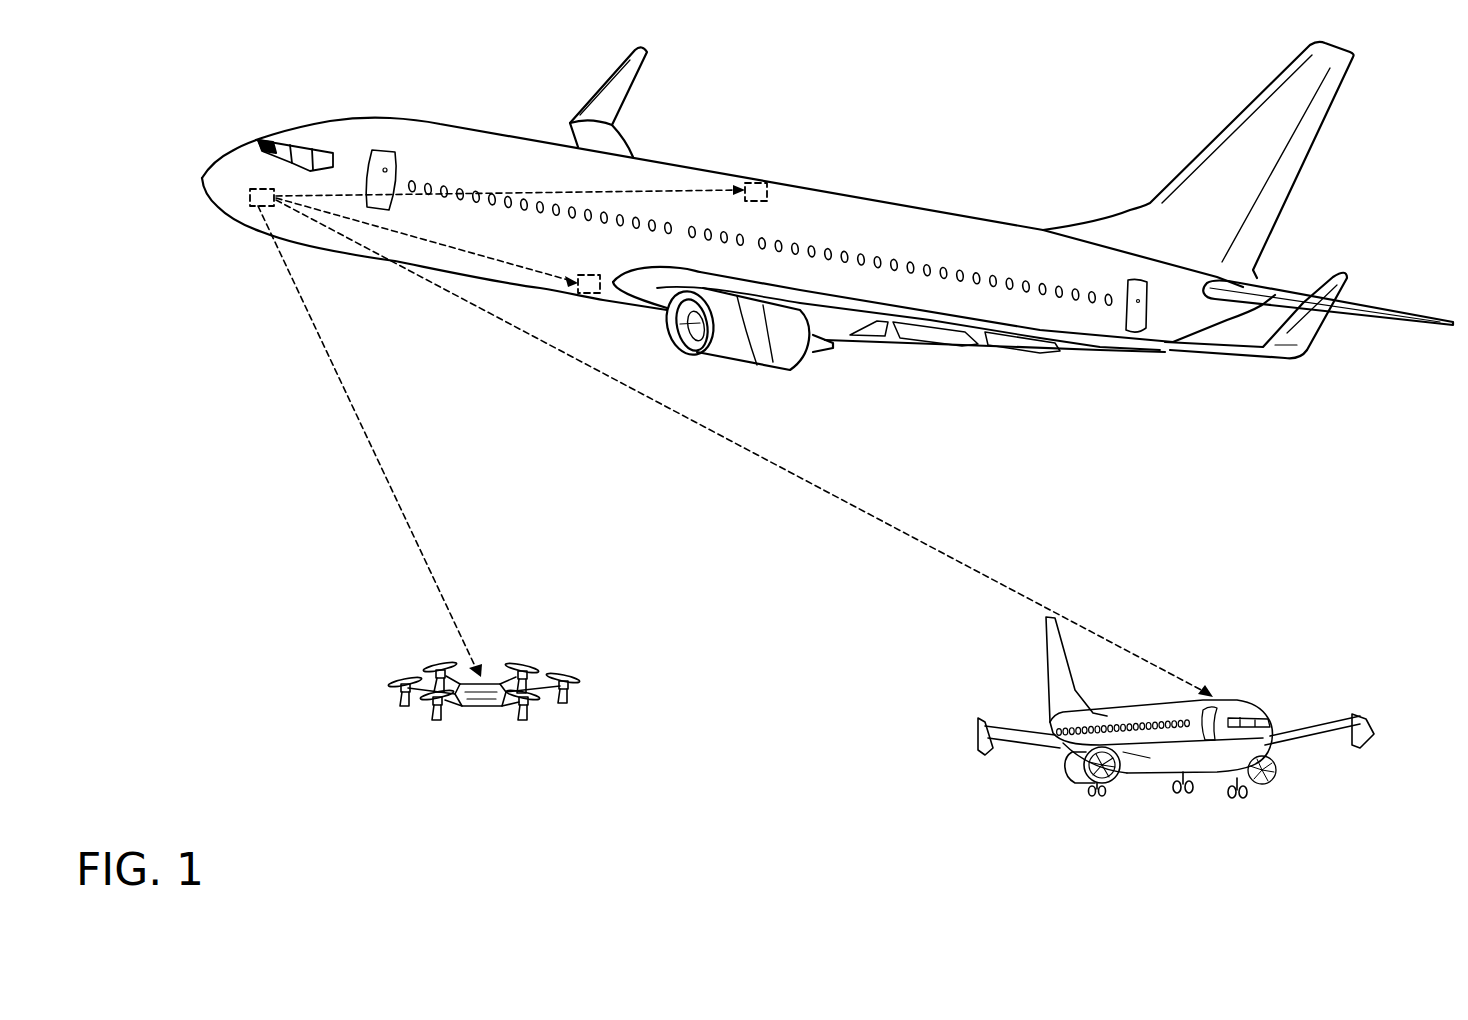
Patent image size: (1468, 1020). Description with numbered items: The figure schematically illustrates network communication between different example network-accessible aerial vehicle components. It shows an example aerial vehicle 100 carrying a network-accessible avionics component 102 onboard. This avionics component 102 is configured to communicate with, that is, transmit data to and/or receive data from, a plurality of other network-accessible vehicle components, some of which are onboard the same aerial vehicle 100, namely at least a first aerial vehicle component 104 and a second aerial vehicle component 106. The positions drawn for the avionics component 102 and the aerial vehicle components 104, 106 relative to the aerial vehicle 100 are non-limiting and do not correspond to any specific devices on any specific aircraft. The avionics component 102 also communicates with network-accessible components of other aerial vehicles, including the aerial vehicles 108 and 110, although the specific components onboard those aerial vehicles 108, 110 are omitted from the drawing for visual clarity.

The aerial vehicle 100 is at (358, 118).
The network-accessible avionics component 102 is at (253, 192).
The first aerial vehicle component 104 is at (583, 276).
The second aerial vehicle component 106 is at (762, 199).
The aerial vehicle 108 is at (396, 678).
The aerial vehicle 110 is at (1240, 700).